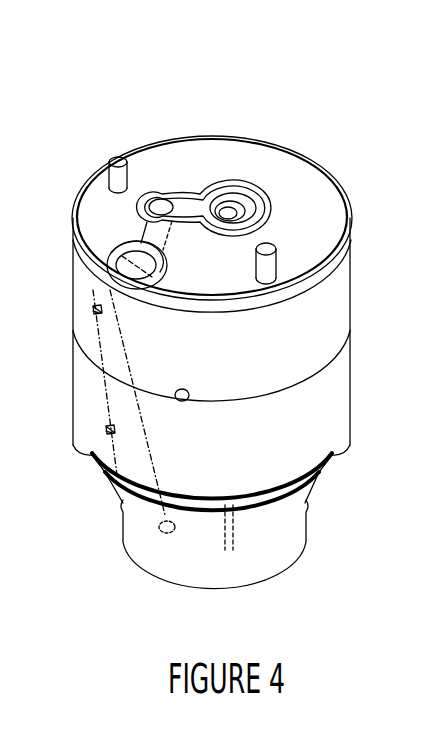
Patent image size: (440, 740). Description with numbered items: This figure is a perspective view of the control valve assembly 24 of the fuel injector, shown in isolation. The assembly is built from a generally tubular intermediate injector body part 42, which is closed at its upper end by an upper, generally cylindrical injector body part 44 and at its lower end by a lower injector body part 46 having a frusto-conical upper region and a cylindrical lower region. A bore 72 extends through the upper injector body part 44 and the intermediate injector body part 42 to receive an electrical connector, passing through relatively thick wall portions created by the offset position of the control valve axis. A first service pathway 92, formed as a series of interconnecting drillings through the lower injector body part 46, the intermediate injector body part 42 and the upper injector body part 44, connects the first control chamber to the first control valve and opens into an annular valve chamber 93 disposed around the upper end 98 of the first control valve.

The control valve assembly 24 is at (214, 319).
The intermediate injector body part 42 is at (330, 405).
The upper injector body part 44 is at (337, 298).
The lower injector body part 46 is at (292, 522).
The bore 72 is at (122, 265).
The first service pathway 92 is at (108, 400).
The annular valve chamber 93 is at (221, 196).
The upper end of the first control valve 98 is at (246, 184).